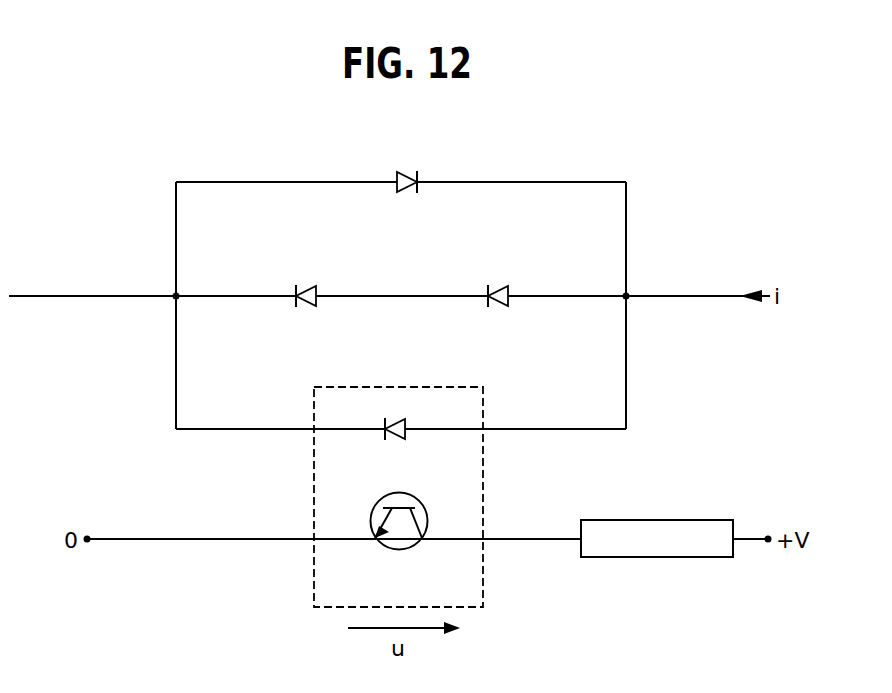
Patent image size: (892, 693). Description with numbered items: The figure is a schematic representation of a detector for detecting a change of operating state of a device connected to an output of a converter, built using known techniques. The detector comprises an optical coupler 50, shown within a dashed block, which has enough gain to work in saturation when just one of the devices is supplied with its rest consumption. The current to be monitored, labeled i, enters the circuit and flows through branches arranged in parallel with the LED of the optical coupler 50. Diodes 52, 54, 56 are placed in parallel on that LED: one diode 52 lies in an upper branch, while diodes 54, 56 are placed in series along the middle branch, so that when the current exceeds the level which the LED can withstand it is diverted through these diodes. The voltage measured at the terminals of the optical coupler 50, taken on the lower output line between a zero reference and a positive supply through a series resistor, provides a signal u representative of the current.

The optical coupler 50 is at (315, 575).
The diode 52 is at (402, 174).
The diode 54 is at (303, 288).
The diode 56 is at (496, 288).